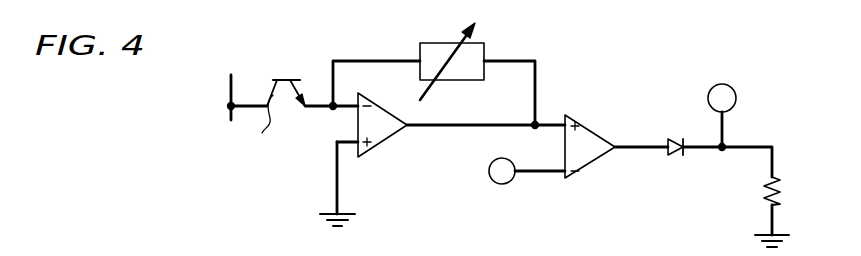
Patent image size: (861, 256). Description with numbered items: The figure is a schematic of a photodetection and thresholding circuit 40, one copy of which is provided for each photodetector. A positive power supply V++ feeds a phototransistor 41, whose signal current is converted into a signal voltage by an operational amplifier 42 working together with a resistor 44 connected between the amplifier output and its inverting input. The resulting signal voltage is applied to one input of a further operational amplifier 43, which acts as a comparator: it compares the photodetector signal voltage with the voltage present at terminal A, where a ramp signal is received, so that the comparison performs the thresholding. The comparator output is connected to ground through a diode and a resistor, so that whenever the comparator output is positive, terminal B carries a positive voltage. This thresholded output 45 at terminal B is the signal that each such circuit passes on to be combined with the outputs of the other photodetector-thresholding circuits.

The phototransistor amplifier circuit 40 is at (651, 78).
The phototransistor 41 is at (288, 80).
The operational amplifier 42 is at (387, 130).
The further operational amplifier 43 is at (587, 152).
The resistor 44 is at (486, 50).
The output 45 is at (733, 88).